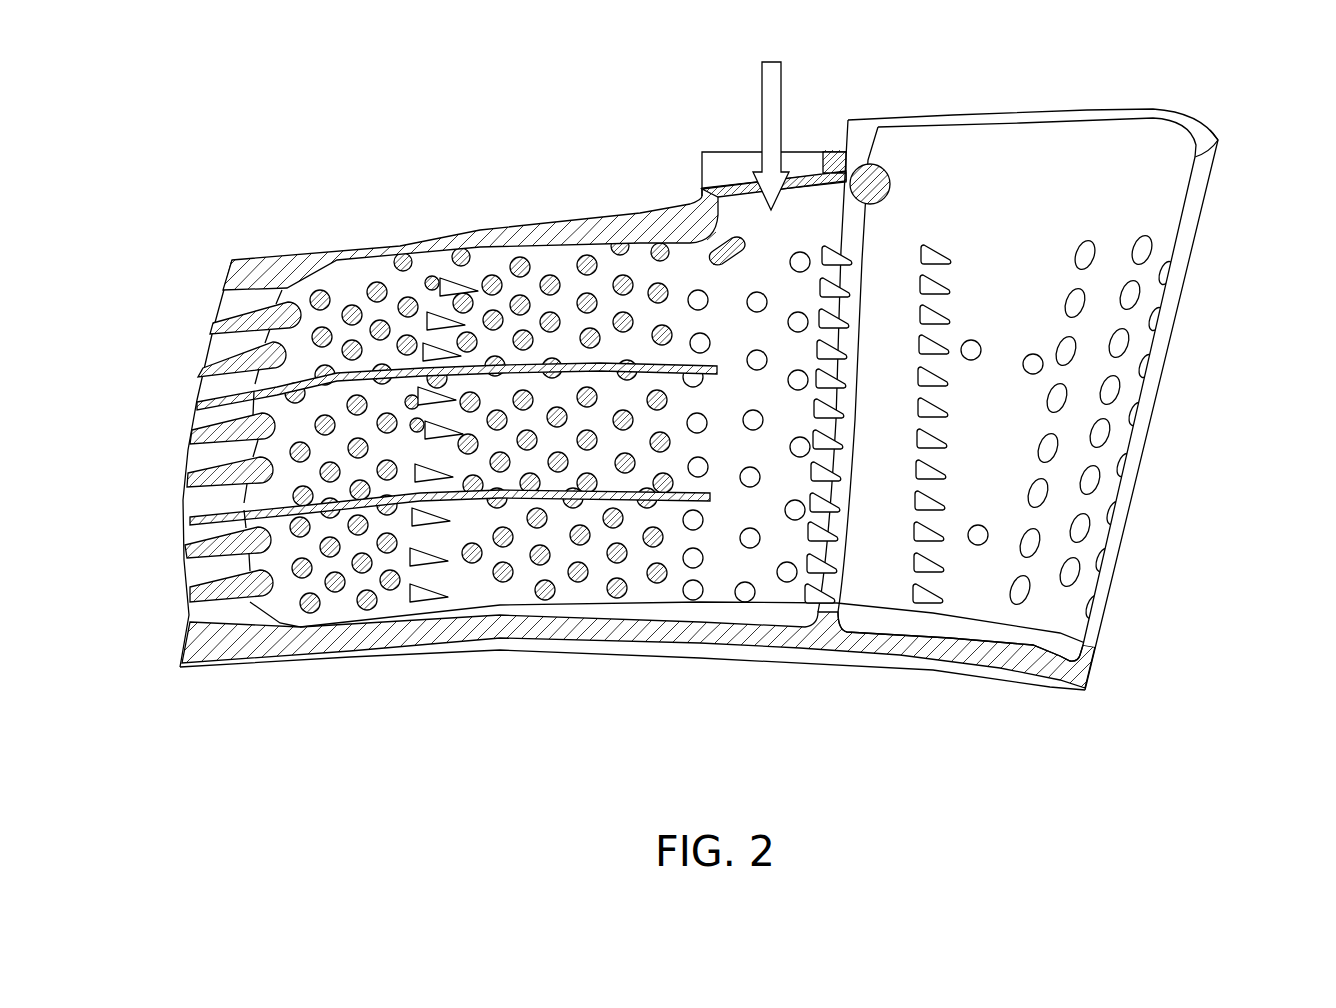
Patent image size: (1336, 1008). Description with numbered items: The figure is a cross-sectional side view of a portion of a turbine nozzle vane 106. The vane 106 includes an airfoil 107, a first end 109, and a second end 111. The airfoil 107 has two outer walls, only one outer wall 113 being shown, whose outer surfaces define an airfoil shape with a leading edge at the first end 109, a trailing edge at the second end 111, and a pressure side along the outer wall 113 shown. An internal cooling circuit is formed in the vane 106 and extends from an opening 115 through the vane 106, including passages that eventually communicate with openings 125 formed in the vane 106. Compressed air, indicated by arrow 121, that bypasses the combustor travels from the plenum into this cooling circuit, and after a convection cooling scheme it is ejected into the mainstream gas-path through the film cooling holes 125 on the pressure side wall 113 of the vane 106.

The turbine nozzle vane 106 is at (1223, 152).
The airfoil 107 is at (1091, 709).
The first end 109 is at (1248, 130).
The second end 111 is at (142, 260).
The outer wall 113 is at (1028, 147).
The opening 115 is at (724, 191).
The compressed air 121 is at (782, 97).
The openings 125 is at (410, 372).